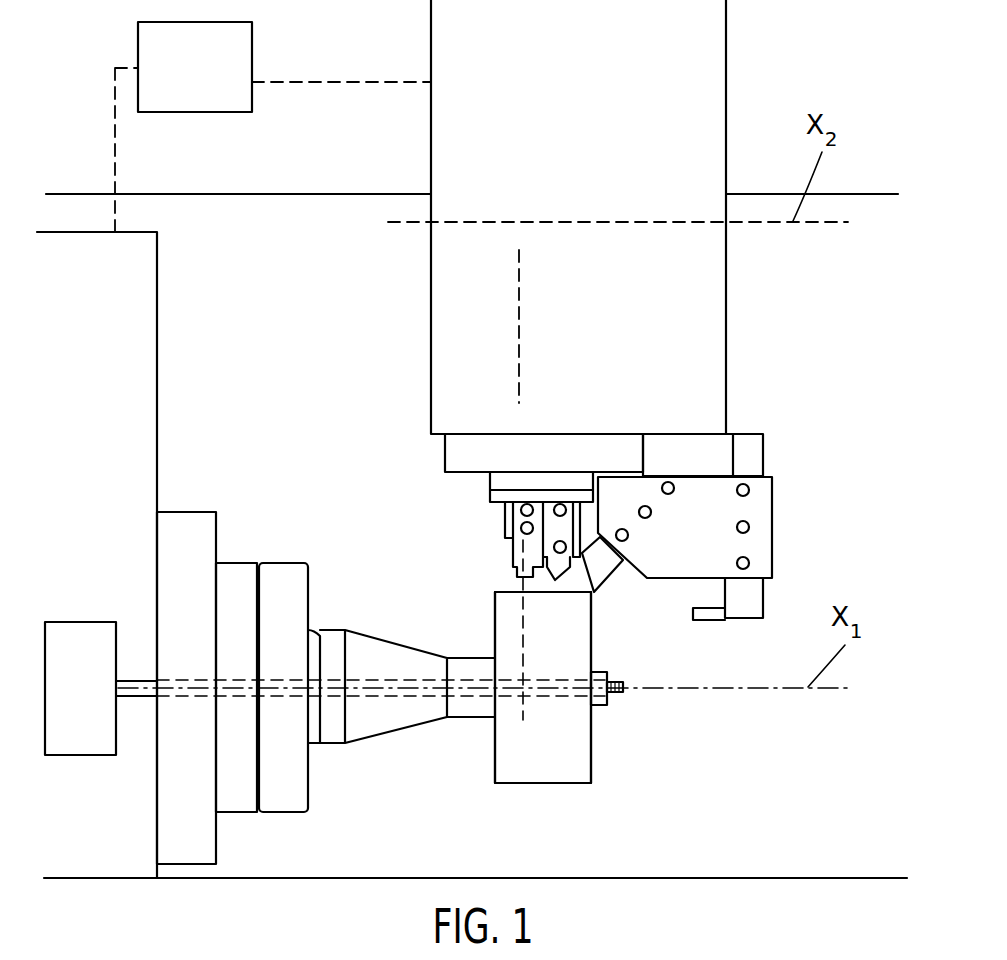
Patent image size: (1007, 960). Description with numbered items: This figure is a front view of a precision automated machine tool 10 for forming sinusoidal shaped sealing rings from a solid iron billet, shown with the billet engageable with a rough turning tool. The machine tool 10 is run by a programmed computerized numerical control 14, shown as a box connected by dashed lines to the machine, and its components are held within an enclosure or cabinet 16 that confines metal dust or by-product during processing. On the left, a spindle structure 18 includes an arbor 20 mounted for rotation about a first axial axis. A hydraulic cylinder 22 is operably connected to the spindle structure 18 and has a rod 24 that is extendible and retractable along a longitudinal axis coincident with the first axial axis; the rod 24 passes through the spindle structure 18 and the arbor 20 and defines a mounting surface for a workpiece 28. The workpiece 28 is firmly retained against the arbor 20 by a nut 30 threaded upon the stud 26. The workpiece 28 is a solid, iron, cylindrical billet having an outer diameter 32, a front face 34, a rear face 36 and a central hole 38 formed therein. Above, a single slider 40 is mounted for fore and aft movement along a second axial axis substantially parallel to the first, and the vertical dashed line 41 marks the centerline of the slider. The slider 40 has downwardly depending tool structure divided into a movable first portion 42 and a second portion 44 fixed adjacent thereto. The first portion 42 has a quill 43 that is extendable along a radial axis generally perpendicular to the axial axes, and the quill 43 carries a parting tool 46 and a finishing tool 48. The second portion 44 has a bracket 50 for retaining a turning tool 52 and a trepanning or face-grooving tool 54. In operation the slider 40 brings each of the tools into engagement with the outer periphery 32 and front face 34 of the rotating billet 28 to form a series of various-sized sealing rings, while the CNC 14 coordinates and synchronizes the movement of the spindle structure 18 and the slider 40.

The machine tool 10 is at (778, 378).
The computerized numerical control (CNC) 14 is at (252, 47).
The enclosure or cabinet 16 is at (738, 877).
The spindle structure 18 is at (238, 812).
The arbor 20 is at (397, 727).
The hydraulic cylinder 22 is at (82, 755).
The rod 24 is at (372, 677).
The stud 26 is at (623, 691).
The workpiece 28 is at (556, 783).
The nut 30 is at (607, 670).
The outer diameter 32 is at (495, 592).
The front face 34 is at (591, 632).
The rear face 36 is at (495, 628).
The central hole 38 is at (542, 693).
The slider 40 is at (431, 303).
The column axis 41 is at (519, 336).
The first portion 42 is at (406, 460).
The quill 43 is at (490, 480).
The second portion 44 is at (785, 465).
The parting tool 46 is at (517, 558).
The finishing tool 48 is at (557, 578).
The bracket 50 is at (753, 522).
The turning tool 52 is at (598, 577).
The trepanning (face-grooving) tool 54 is at (740, 612).